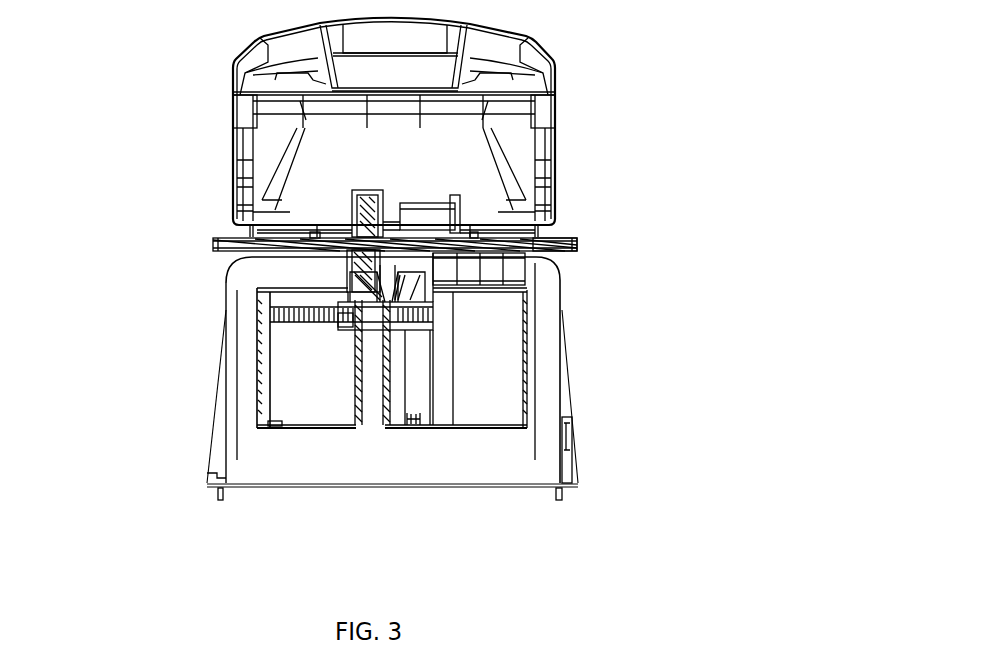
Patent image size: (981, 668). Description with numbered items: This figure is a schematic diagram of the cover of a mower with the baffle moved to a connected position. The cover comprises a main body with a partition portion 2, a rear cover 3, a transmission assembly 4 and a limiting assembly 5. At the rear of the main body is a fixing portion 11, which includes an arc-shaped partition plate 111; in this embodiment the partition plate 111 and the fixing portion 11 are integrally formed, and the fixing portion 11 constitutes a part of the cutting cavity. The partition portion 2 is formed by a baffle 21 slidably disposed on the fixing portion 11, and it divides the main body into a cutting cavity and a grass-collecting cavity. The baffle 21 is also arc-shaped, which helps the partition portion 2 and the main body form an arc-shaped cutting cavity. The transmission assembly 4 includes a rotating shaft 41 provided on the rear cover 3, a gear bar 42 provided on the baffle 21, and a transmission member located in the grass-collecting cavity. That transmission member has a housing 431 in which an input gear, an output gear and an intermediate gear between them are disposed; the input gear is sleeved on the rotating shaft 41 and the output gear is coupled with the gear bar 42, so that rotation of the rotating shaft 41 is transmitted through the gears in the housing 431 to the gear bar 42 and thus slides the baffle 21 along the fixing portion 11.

The partition portion 2 is at (322, 397).
The rear cover 3 is at (432, 157).
The transmission assembly 4 is at (350, 218).
The limiting assembly 5 is at (417, 418).
The fixing portion 11 is at (488, 463).
The baffle 21 is at (317, 352).
The rotating shaft 41 is at (577, 238).
The gear bar 42 is at (290, 310).
The partition plate 111 is at (260, 390).
The housing 431 is at (373, 192).